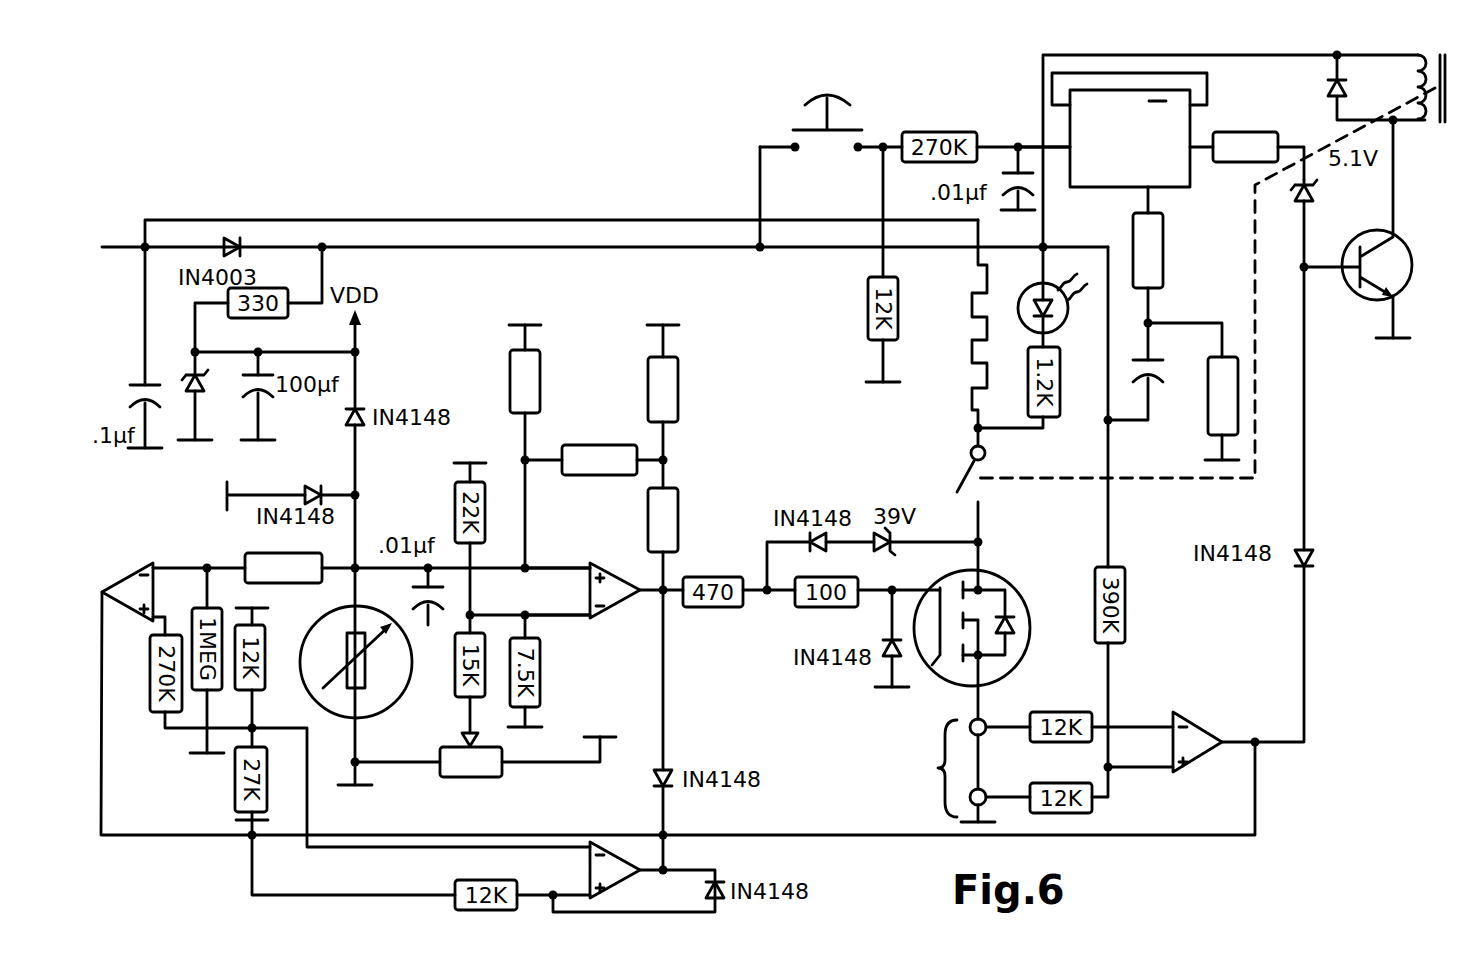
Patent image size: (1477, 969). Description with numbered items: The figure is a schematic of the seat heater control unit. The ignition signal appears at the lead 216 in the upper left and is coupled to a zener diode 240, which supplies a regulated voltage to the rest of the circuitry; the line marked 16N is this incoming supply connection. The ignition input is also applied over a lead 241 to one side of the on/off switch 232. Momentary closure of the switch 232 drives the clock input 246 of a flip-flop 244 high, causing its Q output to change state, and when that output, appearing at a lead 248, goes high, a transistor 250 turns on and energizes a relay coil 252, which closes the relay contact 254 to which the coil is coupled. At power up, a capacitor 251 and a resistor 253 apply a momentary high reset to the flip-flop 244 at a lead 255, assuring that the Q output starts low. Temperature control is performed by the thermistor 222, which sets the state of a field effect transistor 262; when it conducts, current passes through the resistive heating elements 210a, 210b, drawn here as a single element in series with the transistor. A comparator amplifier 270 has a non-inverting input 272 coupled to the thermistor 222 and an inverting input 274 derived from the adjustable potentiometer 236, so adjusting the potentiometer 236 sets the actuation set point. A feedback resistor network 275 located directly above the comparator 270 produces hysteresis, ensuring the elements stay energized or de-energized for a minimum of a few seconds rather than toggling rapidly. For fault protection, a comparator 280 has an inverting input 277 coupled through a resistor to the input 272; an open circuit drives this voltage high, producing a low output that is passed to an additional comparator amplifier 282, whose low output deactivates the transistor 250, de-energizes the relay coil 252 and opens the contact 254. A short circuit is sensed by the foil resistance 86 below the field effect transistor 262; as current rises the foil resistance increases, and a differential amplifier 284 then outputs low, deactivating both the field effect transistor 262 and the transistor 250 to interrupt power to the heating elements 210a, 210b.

The supply line 16N is at (535, 228).
The lead 216 is at (118, 251).
The zener diode 240 is at (188, 372).
The lead 241 is at (520, 251).
The on/off switch 232 is at (843, 115).
The flip-flop 244 is at (1107, 90).
The clock input 246 is at (1055, 150).
The lead 248 is at (1203, 148).
The lead 255 is at (1152, 192).
The capacitor 251 is at (1142, 357).
The relay contact 254 is at (980, 471).
The relay coil 252 is at (1434, 140).
The transistor 250 is at (1410, 267).
The resistor 253 is at (1238, 388).
The resistive heating element 210a is at (907, 341).
The resistive heating element 210b is at (948, 375).
The resistor network 275 is at (622, 409).
The comparator amplifier 270 is at (610, 568).
The non-inverting input 272 is at (556, 566).
The inverting input 274 is at (563, 618).
The inverting input 277 is at (171, 567).
The comparator 280 is at (127, 575).
The thermistor 222 is at (404, 700).
The potentiometer 236 is at (460, 780).
The field effect transistor 262 is at (1000, 573).
The comparator amplifier 282 is at (613, 883).
The differential amplifier 284 is at (1203, 727).
The foil resistance 86 is at (899, 754).